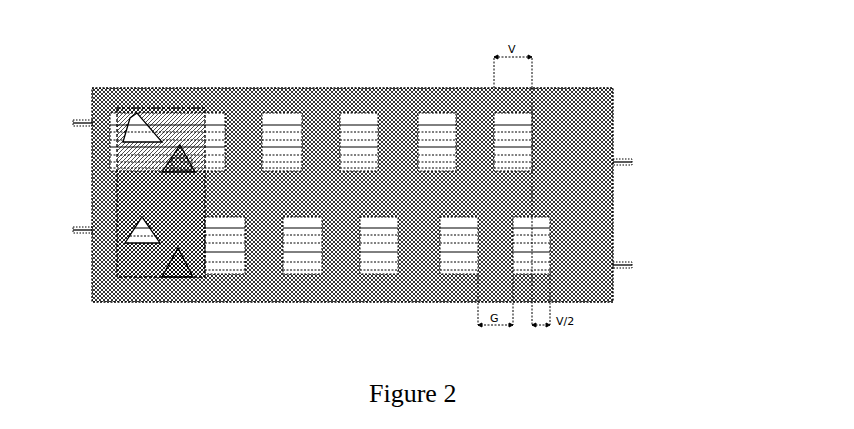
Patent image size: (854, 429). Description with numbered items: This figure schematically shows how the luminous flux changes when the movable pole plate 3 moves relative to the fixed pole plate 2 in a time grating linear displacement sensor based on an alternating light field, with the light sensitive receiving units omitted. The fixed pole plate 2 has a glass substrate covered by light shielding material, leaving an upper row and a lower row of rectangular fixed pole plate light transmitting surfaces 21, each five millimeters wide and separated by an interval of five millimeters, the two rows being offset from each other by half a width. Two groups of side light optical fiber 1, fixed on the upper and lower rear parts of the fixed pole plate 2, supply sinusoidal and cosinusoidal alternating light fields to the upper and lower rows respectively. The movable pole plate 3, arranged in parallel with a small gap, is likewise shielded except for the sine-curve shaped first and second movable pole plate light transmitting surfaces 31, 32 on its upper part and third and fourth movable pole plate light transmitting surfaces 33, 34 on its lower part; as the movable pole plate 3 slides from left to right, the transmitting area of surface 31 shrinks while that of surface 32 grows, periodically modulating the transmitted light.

The side light optical fiber 1 is at (620, 160).
The fixed pole plate 2 is at (363, 88).
The fixed pole plate light transmitting surface 21 is at (435, 115).
The movable pole plate 3 is at (235, 33).
The first movable pole plate light transmitting surface 31 is at (130, 38).
The second movable pole plate light transmitting surface 32 is at (308, 33).
The third movable pole plate light transmitting surface 33 is at (128, 353).
The fourth movable pole plate light transmitting surface 34 is at (176, 353).